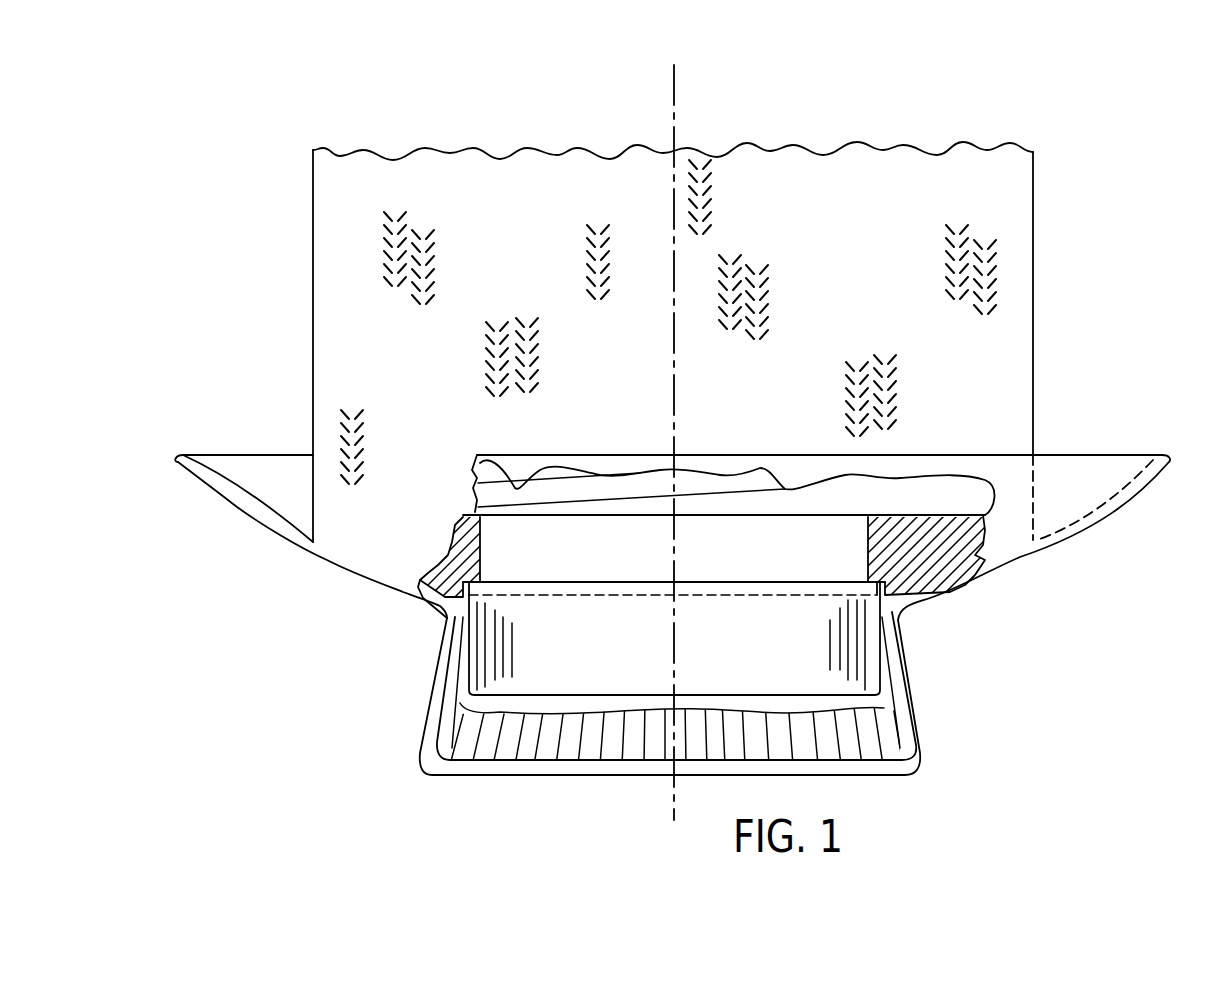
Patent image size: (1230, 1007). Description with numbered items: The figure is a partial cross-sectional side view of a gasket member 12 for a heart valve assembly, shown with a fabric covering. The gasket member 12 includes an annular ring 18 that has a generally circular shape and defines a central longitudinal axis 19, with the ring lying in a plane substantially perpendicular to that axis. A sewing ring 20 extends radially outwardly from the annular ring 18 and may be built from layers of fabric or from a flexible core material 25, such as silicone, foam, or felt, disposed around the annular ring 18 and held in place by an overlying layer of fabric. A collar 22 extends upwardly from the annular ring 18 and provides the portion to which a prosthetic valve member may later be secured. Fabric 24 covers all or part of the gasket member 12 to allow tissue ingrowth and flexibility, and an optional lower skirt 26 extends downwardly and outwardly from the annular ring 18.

The gasket member 12 is at (268, 105).
The annular ring 18 is at (870, 652).
The central longitudinal axis 19 is at (677, 122).
The sewing ring 20 is at (250, 512).
The collar 22 is at (1018, 203).
The fabric 24 is at (387, 253).
The flexible core material 25 is at (1110, 510).
The skirt 26 is at (462, 647).